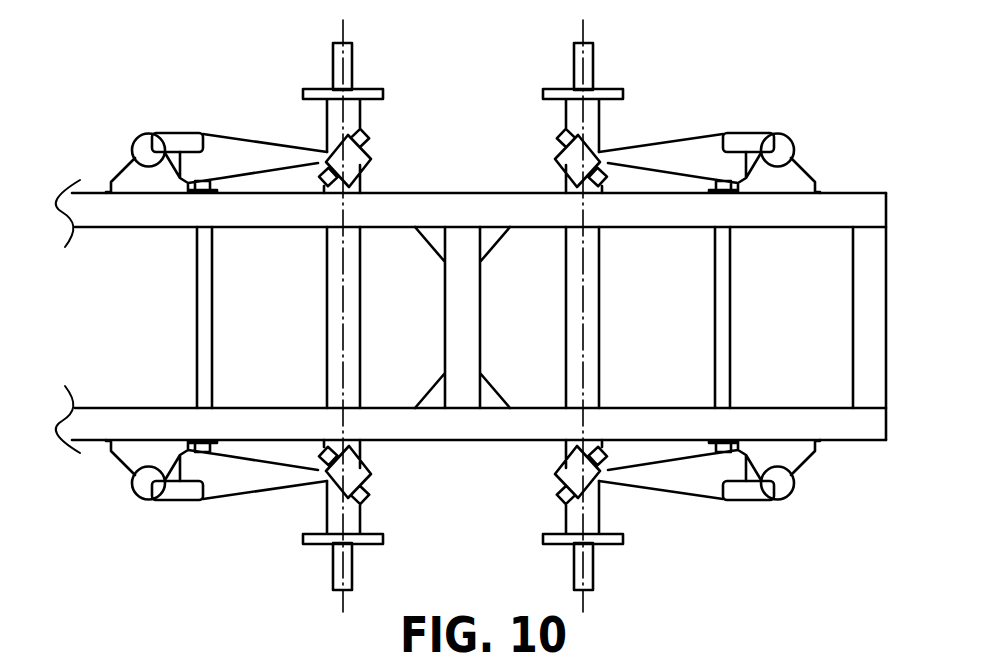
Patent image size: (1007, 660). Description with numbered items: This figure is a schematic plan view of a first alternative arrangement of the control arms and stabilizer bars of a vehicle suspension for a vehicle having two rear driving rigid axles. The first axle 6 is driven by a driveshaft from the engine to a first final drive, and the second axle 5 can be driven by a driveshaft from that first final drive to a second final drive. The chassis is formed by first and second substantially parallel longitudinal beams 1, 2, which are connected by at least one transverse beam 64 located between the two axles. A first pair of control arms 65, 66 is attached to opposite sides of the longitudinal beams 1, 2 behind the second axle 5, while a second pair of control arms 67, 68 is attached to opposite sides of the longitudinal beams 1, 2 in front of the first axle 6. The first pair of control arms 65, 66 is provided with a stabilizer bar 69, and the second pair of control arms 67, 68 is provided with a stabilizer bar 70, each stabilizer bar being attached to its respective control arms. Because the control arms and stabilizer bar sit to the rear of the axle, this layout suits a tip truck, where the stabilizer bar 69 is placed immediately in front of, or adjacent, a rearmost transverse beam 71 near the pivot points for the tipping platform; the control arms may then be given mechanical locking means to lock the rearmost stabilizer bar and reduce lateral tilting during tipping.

The first longitudinal beam 1 is at (478, 202).
The second longitudinal beam 2 is at (457, 428).
The second axle 5 is at (577, 67).
The first axle 6 is at (333, 62).
The transverse beam 64 is at (453, 308).
The control arm 65 is at (705, 488).
The control arm 66 is at (708, 147).
The control arm 67 is at (222, 488).
The control arm 68 is at (217, 147).
The stabilizer bar 69 is at (722, 387).
The stabilizer bar 70 is at (203, 387).
The rearmost transverse beam 71 is at (873, 395).